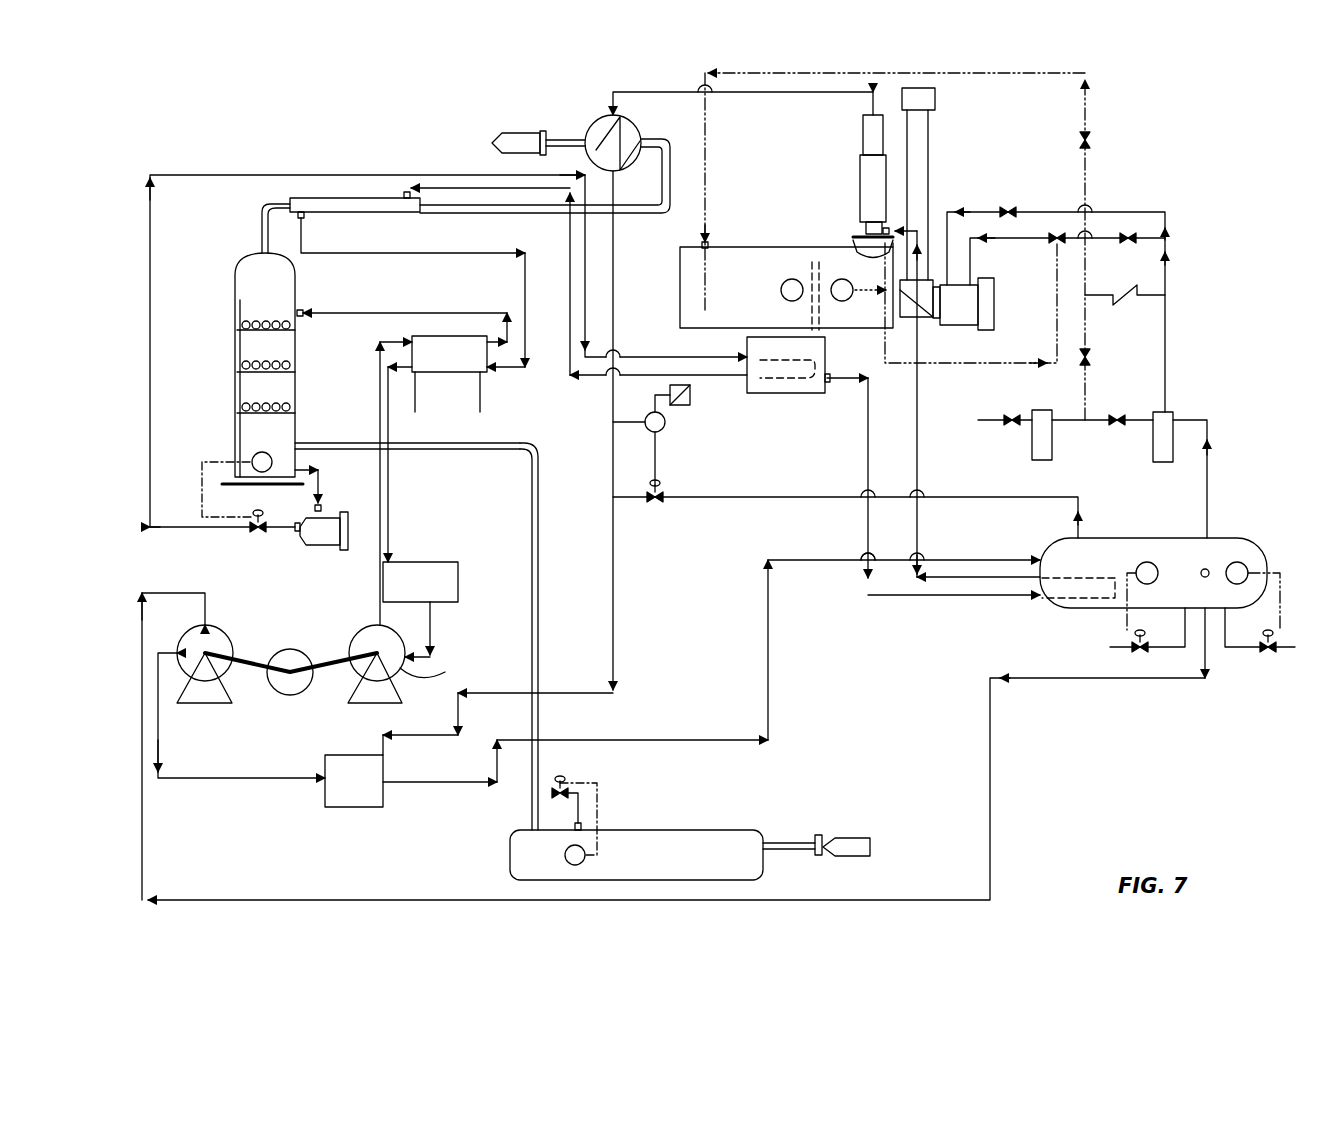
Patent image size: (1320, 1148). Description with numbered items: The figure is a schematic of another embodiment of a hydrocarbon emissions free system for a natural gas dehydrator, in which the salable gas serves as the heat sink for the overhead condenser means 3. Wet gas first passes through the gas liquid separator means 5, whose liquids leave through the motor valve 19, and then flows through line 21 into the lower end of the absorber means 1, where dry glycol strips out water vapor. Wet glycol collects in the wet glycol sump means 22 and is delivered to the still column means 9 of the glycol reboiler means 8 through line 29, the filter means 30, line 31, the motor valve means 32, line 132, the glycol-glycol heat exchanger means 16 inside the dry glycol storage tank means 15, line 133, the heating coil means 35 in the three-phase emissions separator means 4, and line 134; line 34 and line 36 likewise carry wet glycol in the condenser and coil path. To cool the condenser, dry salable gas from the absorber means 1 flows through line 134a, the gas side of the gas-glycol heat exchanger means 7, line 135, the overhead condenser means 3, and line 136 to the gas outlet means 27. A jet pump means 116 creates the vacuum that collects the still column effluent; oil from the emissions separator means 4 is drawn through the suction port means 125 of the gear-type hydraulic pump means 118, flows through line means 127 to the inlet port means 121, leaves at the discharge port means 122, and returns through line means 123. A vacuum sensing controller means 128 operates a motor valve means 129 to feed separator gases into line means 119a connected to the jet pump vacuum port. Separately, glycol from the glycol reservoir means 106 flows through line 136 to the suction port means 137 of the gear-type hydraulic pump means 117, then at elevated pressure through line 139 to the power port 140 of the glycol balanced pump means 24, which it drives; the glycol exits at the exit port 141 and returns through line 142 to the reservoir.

The absorber means 1 is at (297, 276).
The overhead condenser means 3 is at (642, 128).
The three-phase emissions separator means 4 is at (1245, 538).
The gas liquid separator means 5 is at (690, 830).
The gas-glycol heat exchanger means 7 is at (335, 198).
The glycol reboiler means 8 is at (730, 247).
The still column means 9 is at (862, 210).
The dry glycol storage tank means 15 is at (783, 395).
The glycol-glycol heat exchanger means 16 is at (770, 380).
The motor valve 19 is at (570, 785).
The line 21 is at (540, 482).
The wet glycol sump means 22 is at (303, 457).
The glycol balanced pump means 24 is at (460, 336).
The gas outlet means 27 is at (542, 133).
The line 29 is at (320, 480).
The filter means 30 is at (318, 545).
The line 31 is at (285, 532).
The motor valve means 32 is at (250, 532).
The line 34 is at (615, 285).
The heating coil means 35 is at (1060, 600).
The line 36 is at (955, 580).
The glycol reservoir means 106 is at (458, 572).
The jet pump means 116 is at (385, 762).
The gear-type hydraulic pump means 117 is at (345, 695).
The gear-type hydraulic pump means 118 is at (230, 690).
The line means 119a is at (608, 630).
The inlet port means 121 is at (325, 785).
The discharge port means 122 is at (410, 790).
The line means 123 is at (768, 665).
The suction port means 125 is at (222, 630).
The line means 127 is at (185, 780).
The vacuum sensing controller means 128 is at (662, 430).
The motor valve means 129 is at (655, 505).
The line 132 is at (190, 372).
The line 133 is at (375, 628).
The line 134 is at (917, 432).
The line 134a is at (262, 228).
The line 135 is at (666, 212).
The line 136 is at (613, 110).
The suction port means 137 is at (445, 672).
The line 139 is at (380, 400).
The power port 140 is at (400, 340).
The exit port 141 is at (416, 400).
The line 142 is at (390, 530).